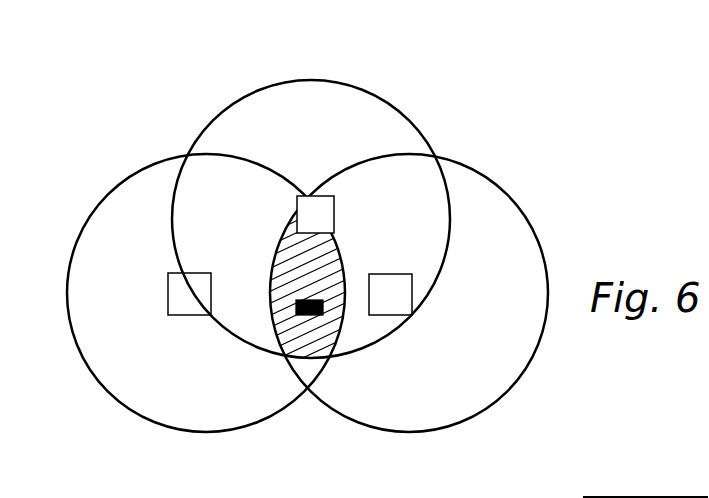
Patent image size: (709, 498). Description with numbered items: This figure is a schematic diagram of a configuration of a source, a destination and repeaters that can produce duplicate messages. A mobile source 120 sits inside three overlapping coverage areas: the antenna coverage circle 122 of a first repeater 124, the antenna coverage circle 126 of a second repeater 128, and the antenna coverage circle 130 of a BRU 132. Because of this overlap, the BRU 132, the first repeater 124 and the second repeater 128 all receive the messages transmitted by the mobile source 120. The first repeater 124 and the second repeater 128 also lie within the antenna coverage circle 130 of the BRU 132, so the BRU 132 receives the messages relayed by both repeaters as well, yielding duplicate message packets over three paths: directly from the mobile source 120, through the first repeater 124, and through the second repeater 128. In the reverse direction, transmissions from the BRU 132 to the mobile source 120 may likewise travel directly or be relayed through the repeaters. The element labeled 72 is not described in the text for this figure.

The base station 72 is at (625, 497).
The mobile source 120 is at (321, 313).
The antenna coverage circle 122 is at (520, 375).
The first repeater 124 is at (412, 290).
The antenna coverage circle 126 is at (125, 410).
The second repeater 128 is at (181, 292).
The antenna coverage circle 130 is at (231, 108).
The BRU 132 is at (338, 210).